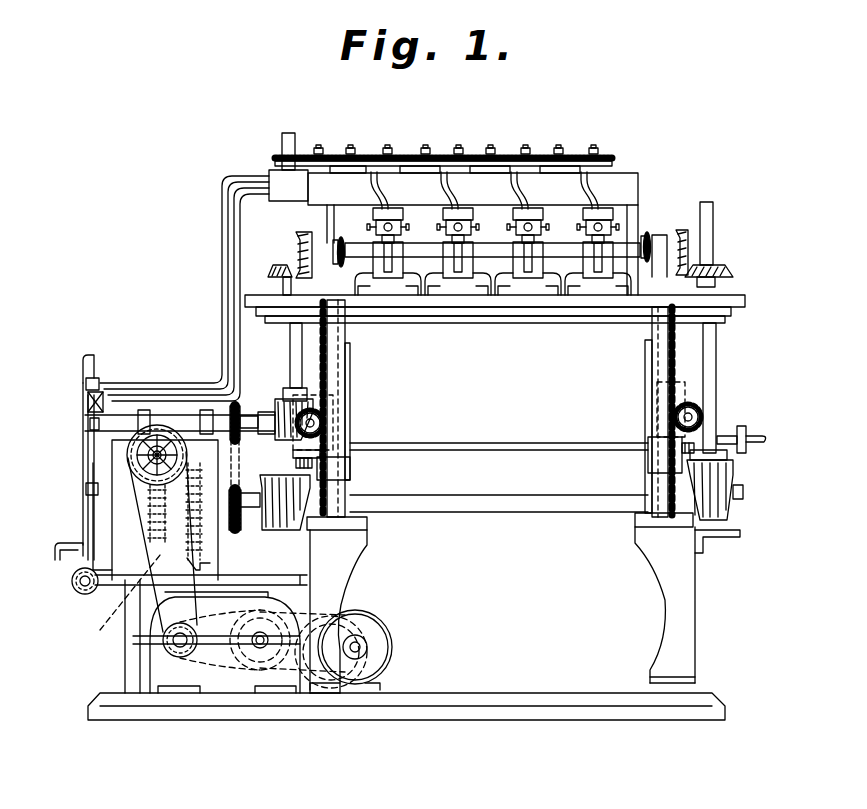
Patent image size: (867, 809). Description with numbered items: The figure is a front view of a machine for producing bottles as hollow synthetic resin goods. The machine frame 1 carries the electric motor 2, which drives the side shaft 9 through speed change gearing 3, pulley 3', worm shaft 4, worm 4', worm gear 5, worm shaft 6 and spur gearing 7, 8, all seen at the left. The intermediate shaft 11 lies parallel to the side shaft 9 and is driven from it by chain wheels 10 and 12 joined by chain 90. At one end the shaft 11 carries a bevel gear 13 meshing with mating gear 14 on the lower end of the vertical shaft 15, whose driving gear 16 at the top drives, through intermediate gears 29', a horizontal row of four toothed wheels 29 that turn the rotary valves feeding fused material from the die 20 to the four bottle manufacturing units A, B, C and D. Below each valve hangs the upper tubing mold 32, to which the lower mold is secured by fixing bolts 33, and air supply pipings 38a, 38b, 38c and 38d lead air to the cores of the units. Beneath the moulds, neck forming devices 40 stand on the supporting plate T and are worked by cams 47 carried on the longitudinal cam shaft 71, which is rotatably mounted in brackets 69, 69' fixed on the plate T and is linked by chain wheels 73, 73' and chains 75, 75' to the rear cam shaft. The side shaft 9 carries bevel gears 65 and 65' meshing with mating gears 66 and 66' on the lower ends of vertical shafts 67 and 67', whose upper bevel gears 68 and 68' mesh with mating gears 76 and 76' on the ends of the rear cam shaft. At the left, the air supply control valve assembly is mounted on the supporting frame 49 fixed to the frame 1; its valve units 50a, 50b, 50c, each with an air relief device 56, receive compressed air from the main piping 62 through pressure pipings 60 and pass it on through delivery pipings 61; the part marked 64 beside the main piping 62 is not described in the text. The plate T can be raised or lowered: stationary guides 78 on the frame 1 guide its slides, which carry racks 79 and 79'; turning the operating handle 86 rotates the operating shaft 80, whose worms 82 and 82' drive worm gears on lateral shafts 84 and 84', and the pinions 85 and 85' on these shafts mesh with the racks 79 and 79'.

The machine frame 1 is at (345, 570).
The electric motor 2 is at (384, 633).
The speed change gearing 3 is at (216, 670).
The pulley 3' is at (136, 505).
The worm shaft 4 is at (156, 418).
The worm 4' is at (160, 408).
The worm gear 5 is at (144, 549).
The worm shaft 6 is at (155, 566).
The spur gearing 7 is at (203, 470).
The spur gearing 8 is at (200, 566).
The side shaft 9 is at (463, 513).
The chain wheel 10 is at (240, 530).
The intermediate shaft 11 is at (193, 413).
The chain wheel 12 is at (236, 406).
The bevel gear 13 is at (278, 400).
The mating gear 14 is at (318, 402).
The vertical shaft 15 is at (281, 348).
The driving gear 16 is at (274, 157).
The die 20 is at (632, 180).
The toothed wheel 29 is at (470, 140).
The intermediate gears 29' is at (464, 149).
The upper tubing mold 32 is at (402, 233).
The fixing bolts 33 is at (472, 233).
The air supply piping 38a is at (376, 190).
The air supply piping 38b is at (446, 190).
The air supply piping 38c is at (516, 190).
The air supply piping 38d is at (586, 190).
The neck forming device 40 is at (492, 270).
The cam 47 is at (388, 273).
The supporting frame 49 is at (88, 440).
The valve 50a is at (86, 385).
The valve 50b is at (90, 425).
The valve 50c is at (86, 489).
The air relief device 56 is at (88, 400).
The pressure piping 60 is at (90, 358).
The air delivery piping 61 is at (124, 395).
The main piping 62 is at (80, 590).
The bracket 64 is at (80, 558).
The bevel gear 65 is at (281, 546).
The bevel gear 65' is at (746, 515).
The mating gear 66 is at (275, 508).
The mating gear 66' is at (725, 490).
The vertical shaft 67 is at (248, 356).
The vertical shaft 67' is at (725, 388).
The bevel gear 68 is at (241, 279).
The bevel gear 68' is at (721, 244).
The bracket 69 is at (361, 327).
The bracket 69' is at (626, 327).
The cam shaft 71 is at (558, 250).
The chain wheel 73 is at (345, 240).
The chain wheel 73' is at (653, 235).
The chain 75 is at (311, 329).
The chain 75' is at (683, 332).
The mating gear 76 is at (281, 255).
The mating gear 76' is at (713, 246).
The stationary guide 78 is at (352, 352).
The rack 79 is at (352, 408).
The rack 79' is at (639, 412).
The operating shaft 80 is at (471, 442).
The worm 82 is at (337, 465).
The worm 82' is at (663, 455).
The lateral shaft 84 is at (337, 422).
The lateral shaft 84' is at (649, 410).
The pinion 85 is at (339, 420).
The pinion 85' is at (653, 414).
The operating handle 86 is at (755, 426).
The chain 90 is at (238, 462).
The supporting plate T is at (740, 300).
The bottle manufacturing unit A is at (410, 217).
The bottle manufacturing unit B is at (481, 217).
The bottle manufacturing unit C is at (552, 217).
The bottle manufacturing unit D is at (618, 217).